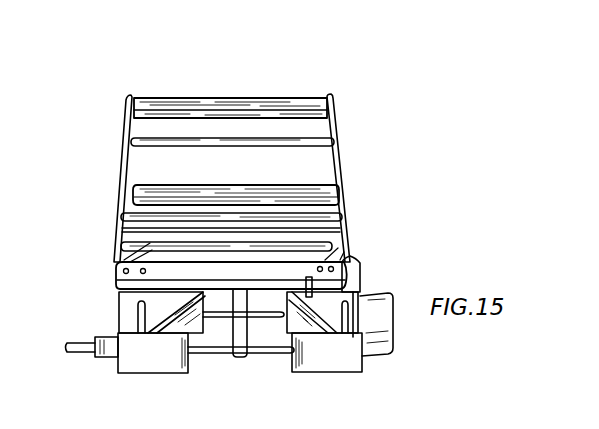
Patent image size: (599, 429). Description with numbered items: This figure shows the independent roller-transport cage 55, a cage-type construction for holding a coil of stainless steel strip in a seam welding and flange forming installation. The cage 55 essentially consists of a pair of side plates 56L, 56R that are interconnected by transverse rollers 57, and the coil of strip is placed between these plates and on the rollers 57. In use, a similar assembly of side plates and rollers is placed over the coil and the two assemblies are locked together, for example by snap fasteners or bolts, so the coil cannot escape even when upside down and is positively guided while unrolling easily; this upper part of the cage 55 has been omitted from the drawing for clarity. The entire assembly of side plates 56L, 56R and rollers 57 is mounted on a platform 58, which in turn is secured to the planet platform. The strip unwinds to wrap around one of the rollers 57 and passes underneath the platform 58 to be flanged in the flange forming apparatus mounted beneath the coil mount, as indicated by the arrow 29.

The roller-transport cage 55 is at (343, 119).
The left side plate 56L is at (118, 178).
The right side plate 56R is at (343, 170).
The transverse rollers 57 is at (158, 281).
The arrow indicating strip path 29 is at (116, 238).
The platform 58 is at (352, 270).